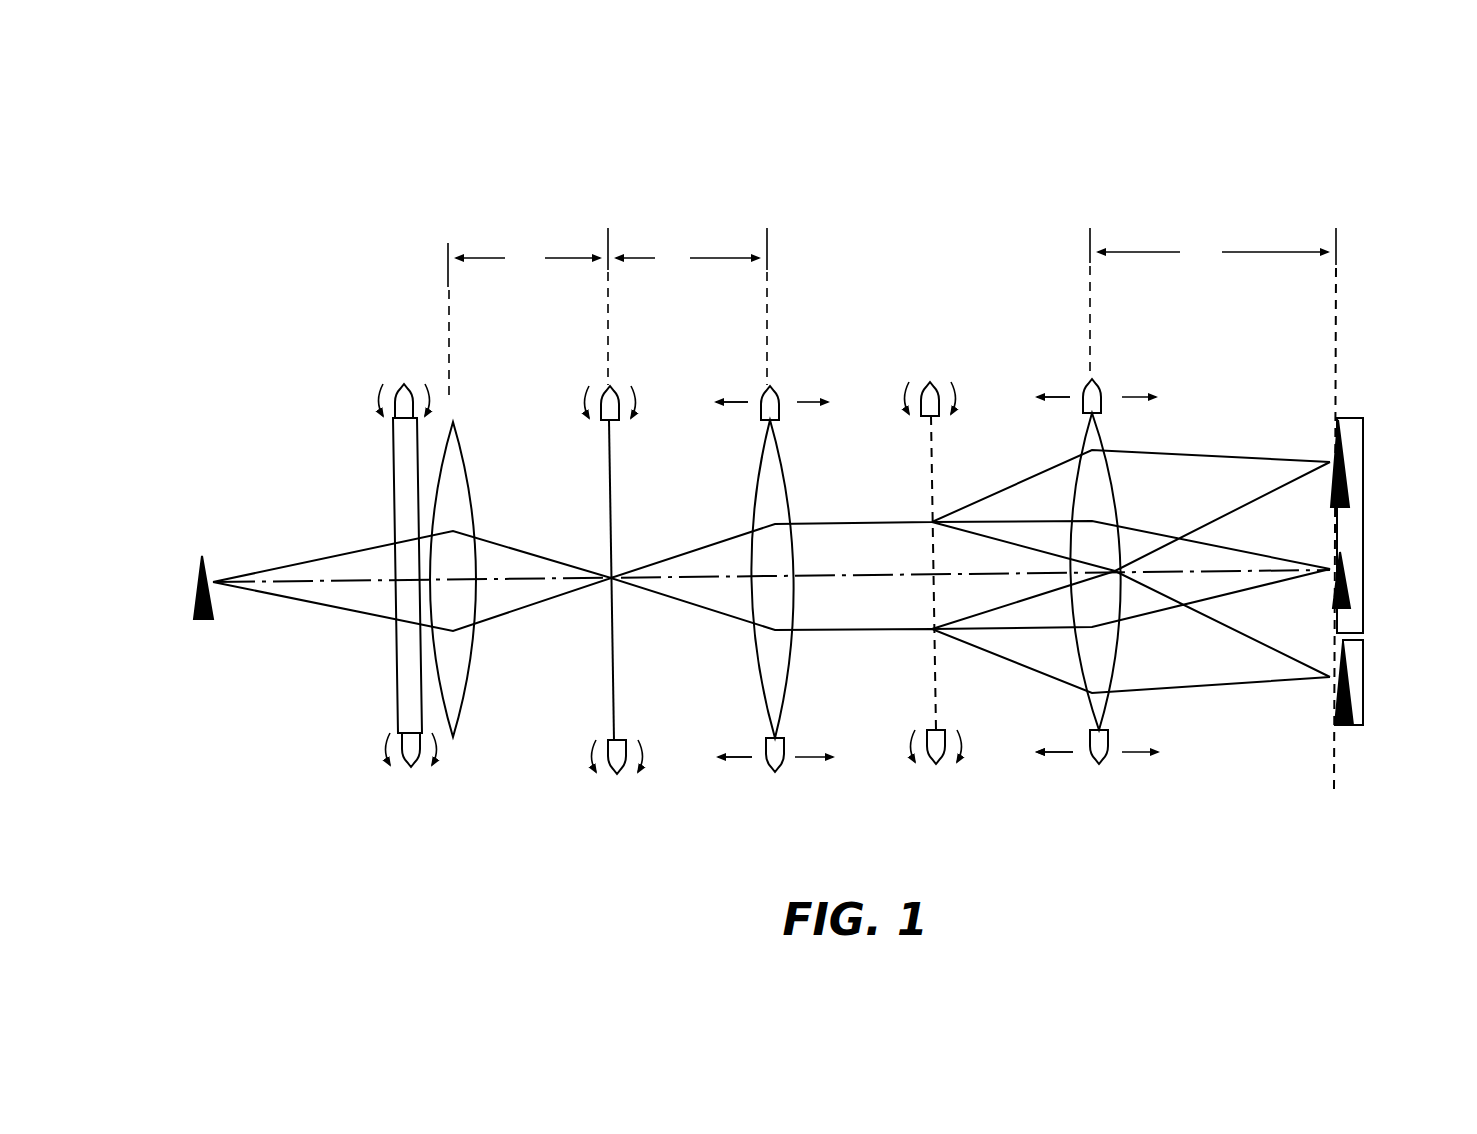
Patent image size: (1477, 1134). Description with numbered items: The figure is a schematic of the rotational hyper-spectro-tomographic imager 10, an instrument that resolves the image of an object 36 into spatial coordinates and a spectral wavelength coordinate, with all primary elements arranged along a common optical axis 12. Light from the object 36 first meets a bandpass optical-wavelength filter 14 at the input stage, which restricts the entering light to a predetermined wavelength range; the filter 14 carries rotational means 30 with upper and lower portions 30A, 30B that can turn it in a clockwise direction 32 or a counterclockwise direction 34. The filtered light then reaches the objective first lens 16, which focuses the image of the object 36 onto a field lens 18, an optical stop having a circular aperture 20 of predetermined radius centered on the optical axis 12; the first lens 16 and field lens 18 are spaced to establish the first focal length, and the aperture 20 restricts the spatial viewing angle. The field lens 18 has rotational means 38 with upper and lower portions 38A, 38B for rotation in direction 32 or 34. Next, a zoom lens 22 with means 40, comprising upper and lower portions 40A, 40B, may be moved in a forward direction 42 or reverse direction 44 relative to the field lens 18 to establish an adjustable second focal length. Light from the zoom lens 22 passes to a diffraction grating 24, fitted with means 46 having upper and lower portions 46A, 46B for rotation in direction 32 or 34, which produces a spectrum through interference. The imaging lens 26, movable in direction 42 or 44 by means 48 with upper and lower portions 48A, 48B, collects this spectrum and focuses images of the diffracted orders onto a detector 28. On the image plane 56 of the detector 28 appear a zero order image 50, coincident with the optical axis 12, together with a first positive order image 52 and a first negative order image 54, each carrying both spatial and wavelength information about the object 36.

The rotational hyper-spectro-tomographic imager 10 is at (1094, 194).
The optical axis 12 is at (300, 580).
The bandpass optical-wavelength filter 14 is at (394, 505).
The objective first lens 16 is at (473, 503).
The field lens 18 is at (612, 477).
The aperture 20 is at (620, 573).
The zoom lens 22 is at (783, 479).
The diffraction grating 24 is at (932, 461).
The imaging lens 26 is at (1113, 482).
The detector 28 is at (1365, 527).
The rotational means 30 is at (382, 368).
The upper portion 30A is at (404, 387).
The lower portion 30B is at (411, 774).
The clockwise direction 32 is at (711, 556).
The counterclockwise direction 34 is at (600, 557).
The object 36 is at (196, 585).
The rotational means 38 is at (600, 378).
The upper portion 38A is at (617, 385).
The lower portion 38B is at (617, 778).
The movement means 40 is at (758, 386).
The upper portion 40A is at (780, 394).
The lower portion 40B is at (775, 778).
The forward direction 42 is at (885, 599).
The reverse direction 44 is at (995, 599).
The rotational means 46 is at (919, 370).
The upper portion 46A is at (932, 379).
The lower portion 46B is at (936, 769).
The movement means 48 is at (1072, 360).
The upper portion 48A is at (1100, 382).
The lower portion 48B is at (1099, 770).
The zero order image 50 is at (1352, 584).
The first (+) order image 52 is at (1360, 675).
The first (−) order image 54 is at (1362, 478).
The image plane 56 is at (1333, 757).